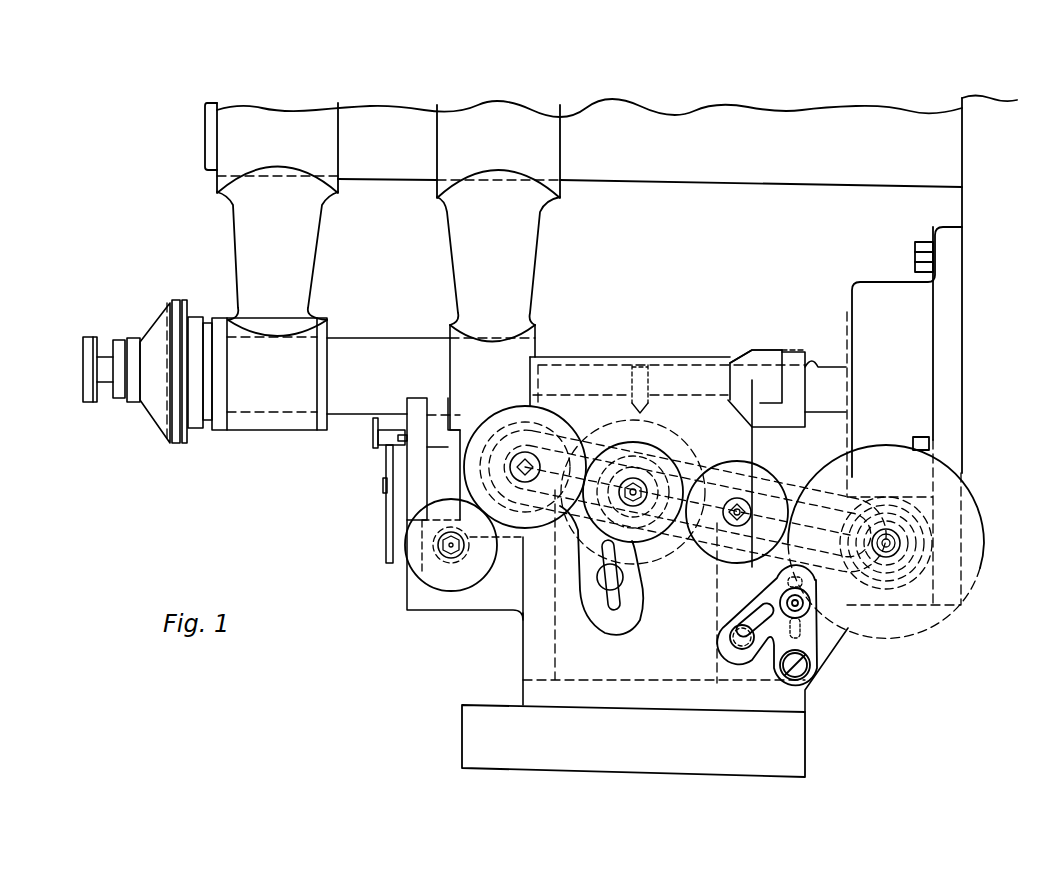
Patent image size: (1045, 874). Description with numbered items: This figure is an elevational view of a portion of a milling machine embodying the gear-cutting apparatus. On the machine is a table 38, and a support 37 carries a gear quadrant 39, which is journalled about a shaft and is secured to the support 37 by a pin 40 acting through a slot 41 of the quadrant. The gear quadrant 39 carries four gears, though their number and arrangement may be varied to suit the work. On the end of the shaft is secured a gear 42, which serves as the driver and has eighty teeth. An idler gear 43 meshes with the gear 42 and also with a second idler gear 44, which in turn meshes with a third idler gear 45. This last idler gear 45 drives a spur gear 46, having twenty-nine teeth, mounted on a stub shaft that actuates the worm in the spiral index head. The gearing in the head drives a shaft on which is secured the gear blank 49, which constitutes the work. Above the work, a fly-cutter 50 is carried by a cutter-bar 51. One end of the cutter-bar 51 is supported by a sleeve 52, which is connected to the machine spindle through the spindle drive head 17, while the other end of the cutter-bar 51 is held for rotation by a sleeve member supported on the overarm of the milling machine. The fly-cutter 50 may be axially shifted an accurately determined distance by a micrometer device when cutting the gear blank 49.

The spindle drive head 17 is at (904, 416).
The support 37 is at (685, 531).
The table 38 is at (633, 741).
The gear quadrant 39 is at (678, 538).
The pin 40 is at (622, 577).
The slot 41 is at (610, 605).
The gear 42 is at (976, 548).
The idler gear 43 is at (762, 470).
The idler gear 44 is at (660, 465).
The idler gear 45 is at (557, 435).
The spur gear 46 is at (473, 575).
The gear blank 49 is at (665, 432).
The fly-cutter 50 is at (642, 413).
The cutter-bar 51 is at (732, 370).
The sleeve 52 is at (818, 377).